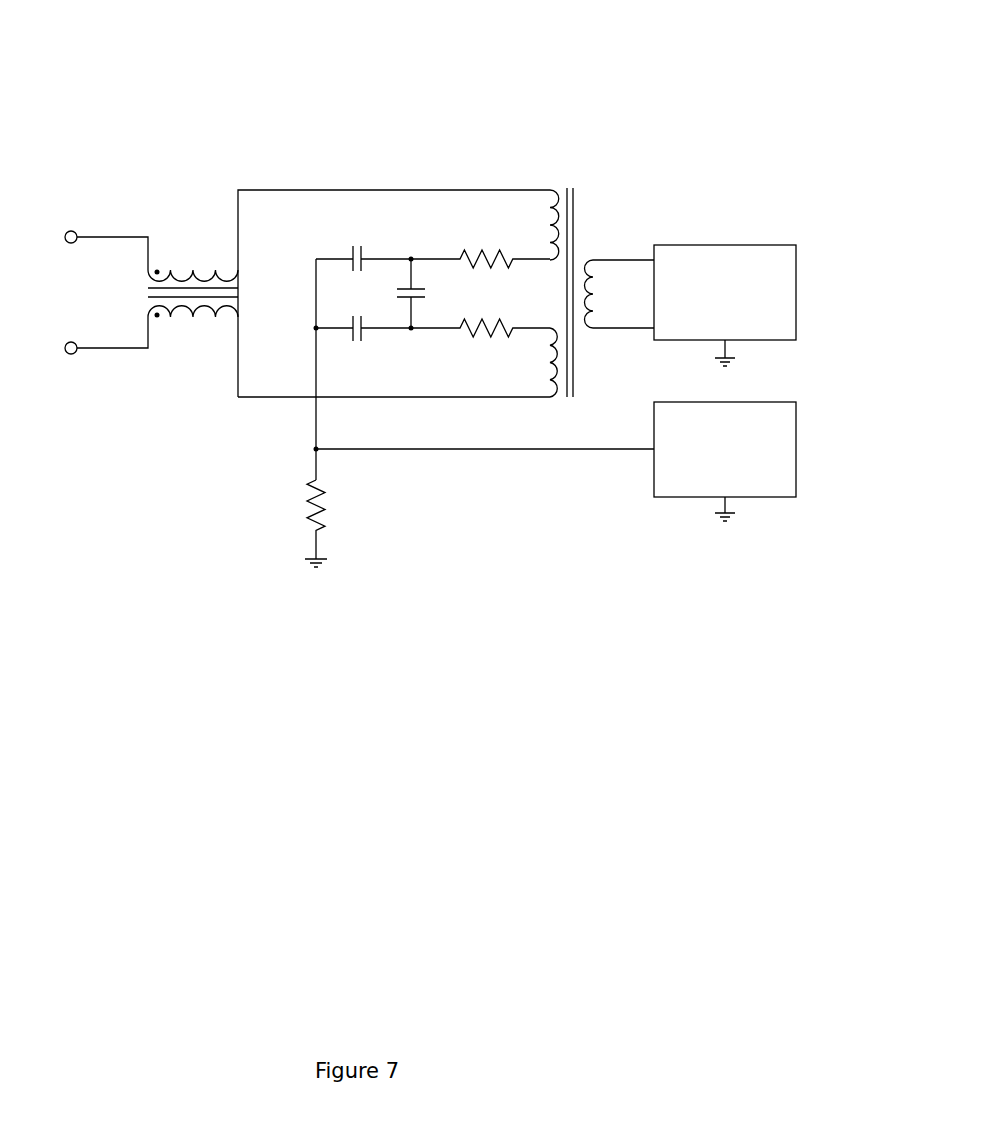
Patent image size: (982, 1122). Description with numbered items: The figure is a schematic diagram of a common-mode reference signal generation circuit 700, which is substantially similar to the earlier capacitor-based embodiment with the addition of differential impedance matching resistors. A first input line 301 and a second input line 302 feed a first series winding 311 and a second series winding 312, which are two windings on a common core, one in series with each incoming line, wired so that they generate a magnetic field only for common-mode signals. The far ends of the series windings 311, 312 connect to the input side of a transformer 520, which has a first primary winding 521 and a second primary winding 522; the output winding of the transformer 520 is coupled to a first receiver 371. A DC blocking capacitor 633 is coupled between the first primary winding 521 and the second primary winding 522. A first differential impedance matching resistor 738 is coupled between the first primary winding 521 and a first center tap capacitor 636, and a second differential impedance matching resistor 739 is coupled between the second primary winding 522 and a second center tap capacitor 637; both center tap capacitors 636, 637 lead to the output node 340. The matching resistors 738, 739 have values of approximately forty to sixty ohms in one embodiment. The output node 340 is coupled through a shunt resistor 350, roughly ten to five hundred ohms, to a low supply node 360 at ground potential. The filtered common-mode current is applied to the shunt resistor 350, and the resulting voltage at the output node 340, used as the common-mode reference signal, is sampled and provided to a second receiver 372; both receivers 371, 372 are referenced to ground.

The circuit 700 is at (286, 70).
The first input line 301 is at (74, 231).
The second input line 302 is at (74, 354).
The first series winding 311 is at (178, 268).
The second series winding 312 is at (178, 318).
The center tap capacitor 636 is at (348, 256).
The center tap capacitor 637 is at (345, 336).
The DC blocking capacitor 633 is at (396, 290).
The first differential impedance matching resistor 738 is at (470, 262).
The second differential impedance matching resistor 739 is at (492, 322).
The transformer 520 is at (564, 253).
The first primary winding 521 is at (548, 230).
The second primary winding 522 is at (548, 368).
The first receiver 371 is at (796, 291).
The second receiver 372 is at (796, 448).
The output node 340 is at (316, 449).
The shunt resistor 350 is at (312, 502).
The low supply node 360 is at (316, 552).